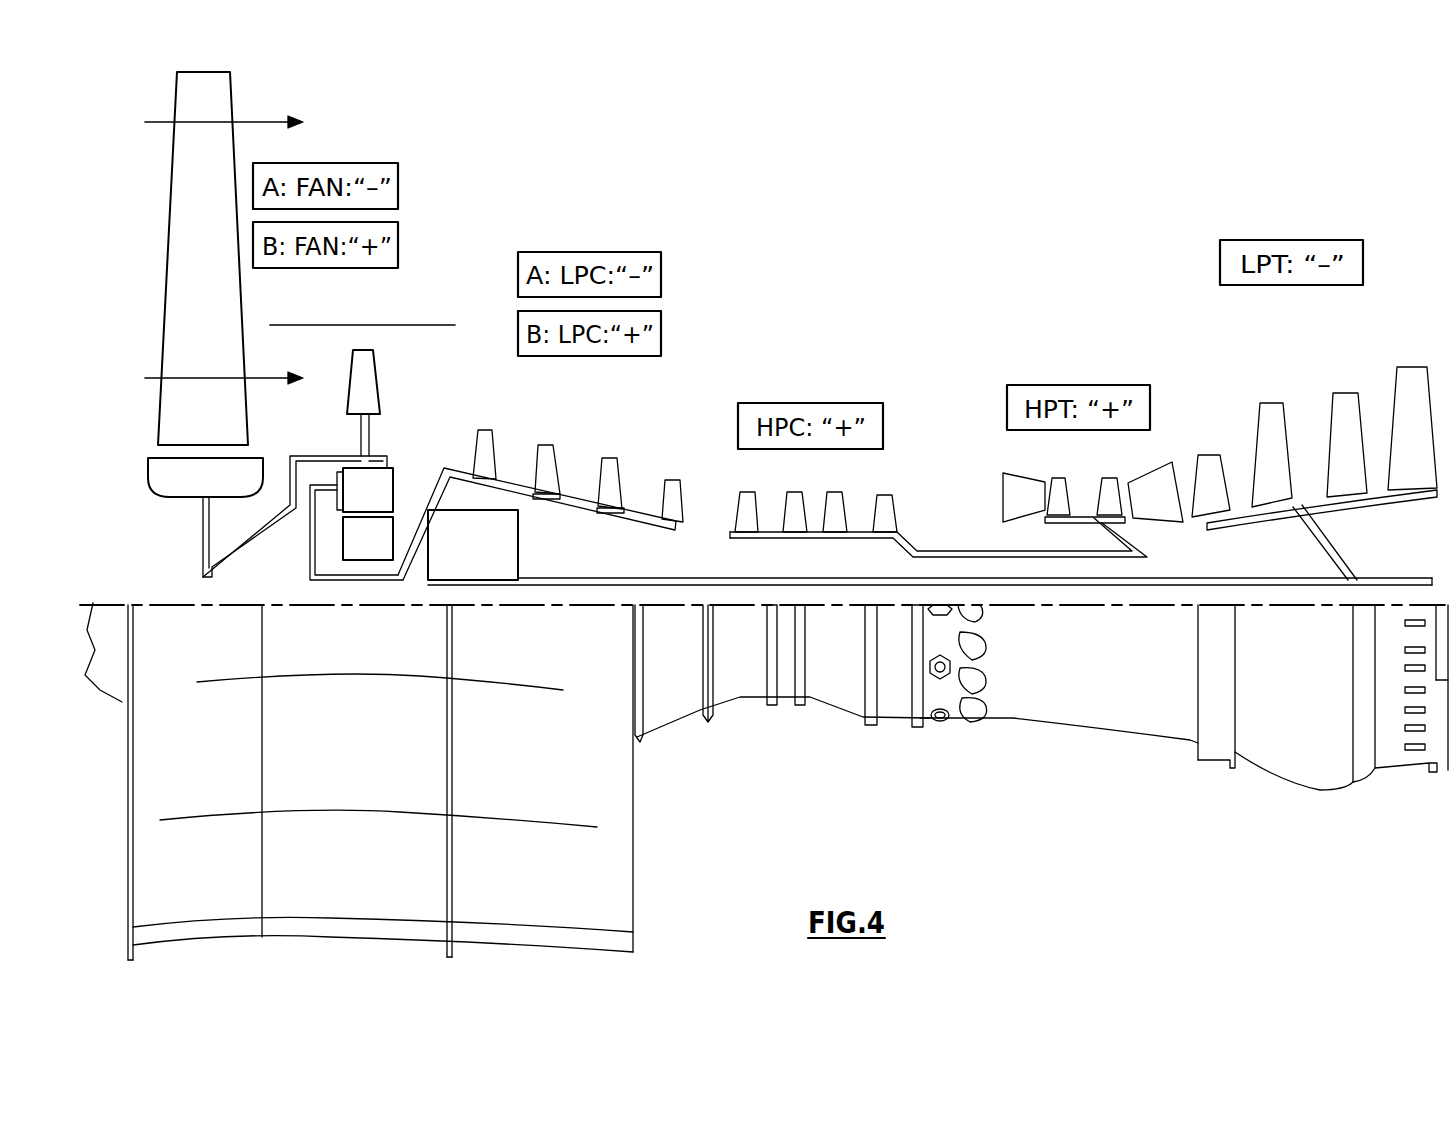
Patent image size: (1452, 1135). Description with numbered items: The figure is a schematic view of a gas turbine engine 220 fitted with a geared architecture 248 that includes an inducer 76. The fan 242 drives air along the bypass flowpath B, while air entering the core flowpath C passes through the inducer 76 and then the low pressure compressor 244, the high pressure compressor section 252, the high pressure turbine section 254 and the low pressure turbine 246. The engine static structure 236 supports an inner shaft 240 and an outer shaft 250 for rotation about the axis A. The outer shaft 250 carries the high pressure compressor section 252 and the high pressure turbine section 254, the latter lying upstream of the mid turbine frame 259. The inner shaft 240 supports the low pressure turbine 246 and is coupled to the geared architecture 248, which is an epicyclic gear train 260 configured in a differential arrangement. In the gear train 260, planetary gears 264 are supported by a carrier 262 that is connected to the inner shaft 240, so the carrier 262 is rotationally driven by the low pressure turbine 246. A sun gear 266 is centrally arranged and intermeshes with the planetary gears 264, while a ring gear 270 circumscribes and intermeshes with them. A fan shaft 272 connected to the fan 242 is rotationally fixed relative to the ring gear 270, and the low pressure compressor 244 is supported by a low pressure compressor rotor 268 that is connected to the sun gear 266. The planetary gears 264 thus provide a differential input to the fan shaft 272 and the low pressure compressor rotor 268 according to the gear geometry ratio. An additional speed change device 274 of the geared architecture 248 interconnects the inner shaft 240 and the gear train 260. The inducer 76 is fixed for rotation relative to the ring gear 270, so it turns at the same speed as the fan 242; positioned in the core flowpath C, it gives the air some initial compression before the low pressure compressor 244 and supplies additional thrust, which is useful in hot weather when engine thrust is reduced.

The engine 220 is at (882, 212).
The fan 242 is at (223, 168).
The inducer 76 is at (373, 372).
The geared architecture 248 is at (470, 355).
The planetary gears 264 is at (383, 475).
The low pressure compressor rotor 268 is at (433, 481).
The ring gear 270 is at (352, 456).
The fan shaft 272 is at (250, 530).
The carrier 262 is at (313, 520).
The sun gear 266 is at (357, 553).
The epicyclic gear train 260 is at (374, 596).
The speed change device 274 is at (514, 552).
The low pressure compressor 244 is at (465, 420).
The high pressure compressor section 252 is at (727, 395).
The high pressure turbine section 254 is at (1127, 380).
The engine static structure 236 is at (1003, 455).
The mid turbine frame 259 is at (1163, 462).
The low pressure turbine 246 is at (1183, 330).
The outer shaft 250 is at (1040, 562).
The inner shaft 240 is at (665, 583).
The axis A is at (533, 607).
The bypass flowpath B is at (255, 122).
The core flowpath C is at (267, 380).